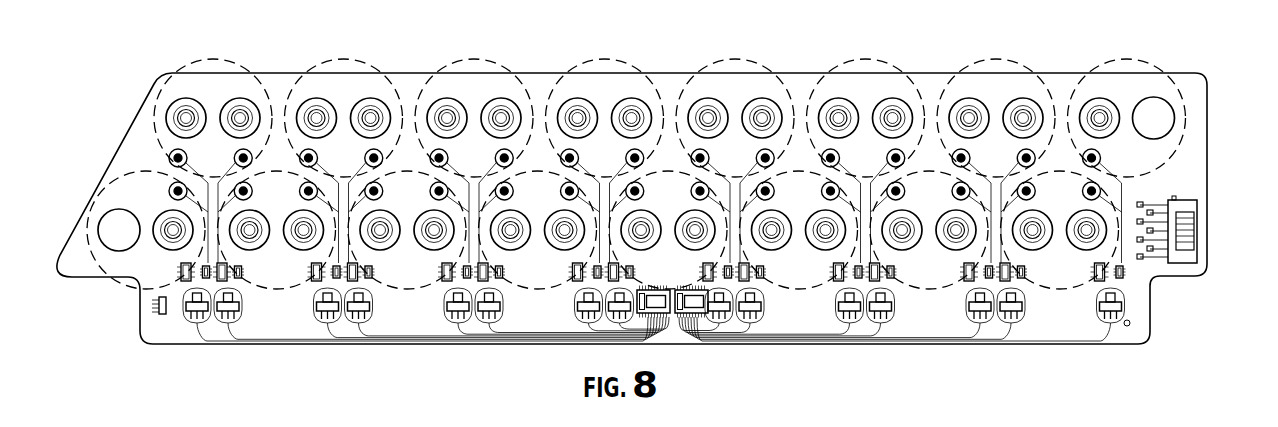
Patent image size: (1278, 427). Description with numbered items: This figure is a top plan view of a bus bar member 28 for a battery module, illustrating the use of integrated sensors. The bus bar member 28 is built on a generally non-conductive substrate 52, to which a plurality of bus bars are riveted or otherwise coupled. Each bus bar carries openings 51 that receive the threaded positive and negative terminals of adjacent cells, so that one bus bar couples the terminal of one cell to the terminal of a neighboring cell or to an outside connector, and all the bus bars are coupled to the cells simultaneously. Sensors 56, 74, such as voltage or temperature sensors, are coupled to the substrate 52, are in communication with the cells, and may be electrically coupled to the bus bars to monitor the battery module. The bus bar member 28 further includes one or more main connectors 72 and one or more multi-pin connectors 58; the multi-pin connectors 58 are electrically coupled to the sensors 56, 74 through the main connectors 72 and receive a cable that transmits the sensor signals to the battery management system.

The bus bar member 28 is at (666, 203).
The openings 51 is at (1024, 117).
The substrate 52 is at (1184, 164).
The sensors 56 is at (1013, 317).
The multi-pin connectors 58 is at (1190, 219).
The main connectors 72 is at (696, 315).
The sensors 74 is at (895, 297).